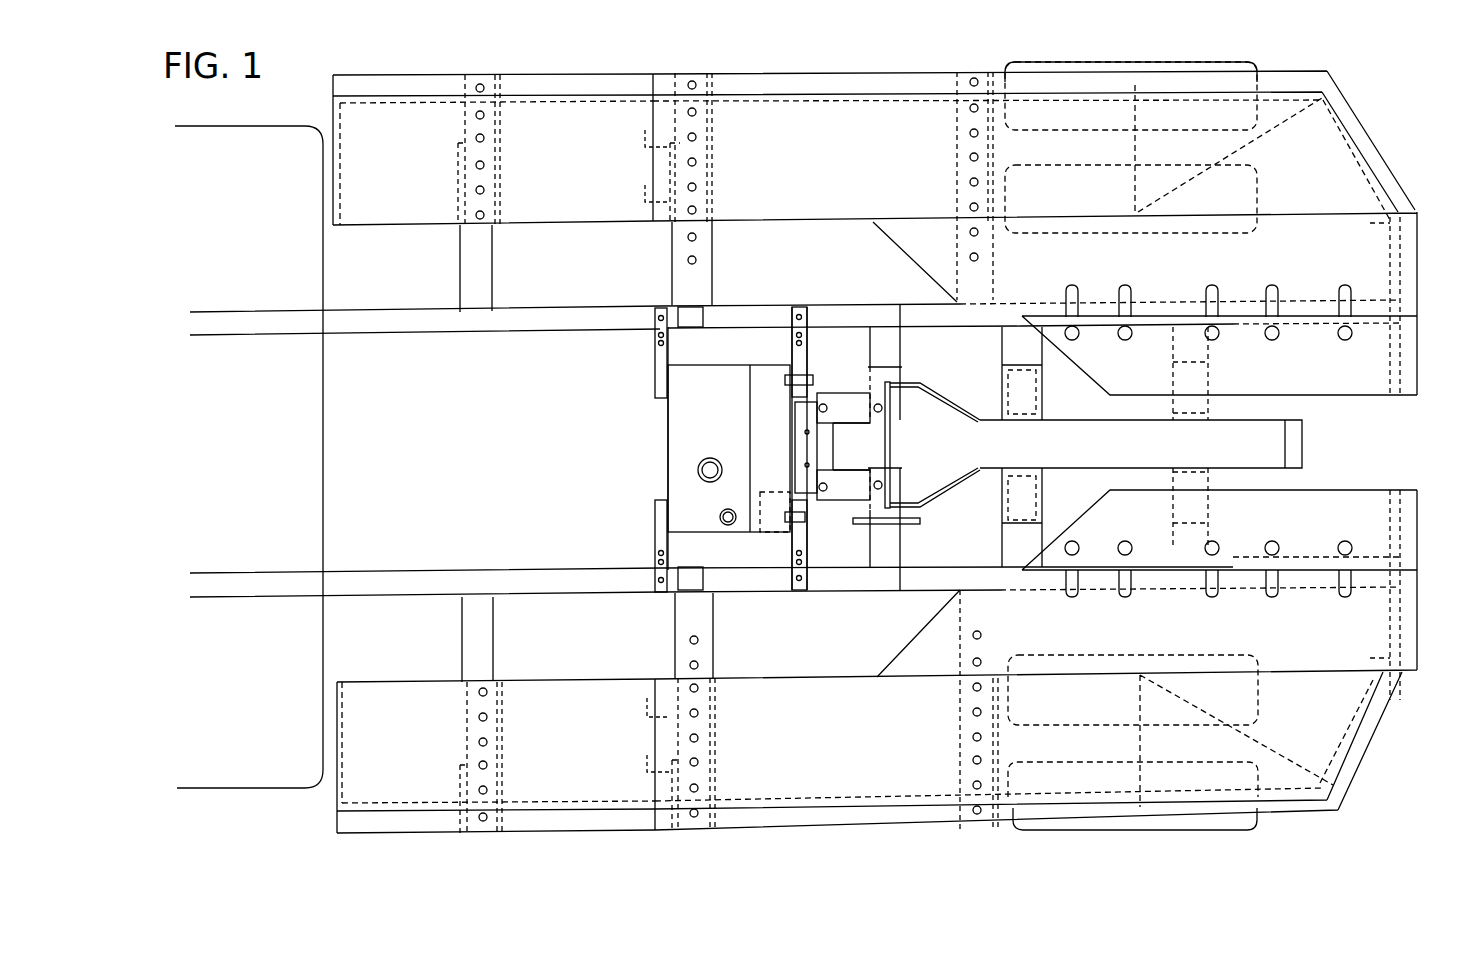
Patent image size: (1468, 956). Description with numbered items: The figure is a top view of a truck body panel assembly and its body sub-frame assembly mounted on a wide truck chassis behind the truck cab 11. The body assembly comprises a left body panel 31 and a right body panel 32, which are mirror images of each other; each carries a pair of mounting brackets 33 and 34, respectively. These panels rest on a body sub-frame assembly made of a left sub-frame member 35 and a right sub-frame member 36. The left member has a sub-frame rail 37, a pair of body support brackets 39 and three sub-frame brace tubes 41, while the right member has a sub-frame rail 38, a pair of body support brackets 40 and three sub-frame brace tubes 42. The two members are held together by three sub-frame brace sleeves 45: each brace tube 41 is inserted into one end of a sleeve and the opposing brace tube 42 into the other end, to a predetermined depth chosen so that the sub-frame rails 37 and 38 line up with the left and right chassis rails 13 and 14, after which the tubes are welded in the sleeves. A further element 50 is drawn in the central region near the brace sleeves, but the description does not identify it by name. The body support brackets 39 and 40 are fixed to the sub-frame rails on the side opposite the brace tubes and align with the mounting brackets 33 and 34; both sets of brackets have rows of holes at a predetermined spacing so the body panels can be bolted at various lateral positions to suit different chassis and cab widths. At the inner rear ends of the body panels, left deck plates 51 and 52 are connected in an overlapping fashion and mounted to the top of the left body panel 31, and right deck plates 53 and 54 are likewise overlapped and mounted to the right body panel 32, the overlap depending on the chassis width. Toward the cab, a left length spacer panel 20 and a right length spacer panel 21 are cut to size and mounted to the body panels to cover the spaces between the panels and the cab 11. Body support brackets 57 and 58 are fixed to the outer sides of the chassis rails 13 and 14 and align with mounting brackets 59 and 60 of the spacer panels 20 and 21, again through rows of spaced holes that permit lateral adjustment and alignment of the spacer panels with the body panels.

The truck cab 11 is at (237, 782).
The left chassis rail 13 is at (425, 585).
The right chassis rail 14 is at (420, 323).
The left length spacer panel 20 is at (575, 780).
The right length spacer panel 21 is at (390, 127).
The left body panel 31 is at (888, 780).
The right body panel 32 is at (815, 132).
The mounting brackets 33 is at (695, 830).
The mounting brackets 34 is at (687, 70).
The left sub-frame member 35 is at (1008, 600).
The right sub-frame member 36 is at (1008, 291).
The sub-frame rail 37 is at (1177, 590).
The sub-frame rail 38 is at (1187, 300).
The body support brackets 39 is at (700, 650).
The body support brackets 40 is at (705, 282).
The sub-frame brace tubes 41 is at (880, 548).
The sub-frame brace tubes 42 is at (878, 340).
The sub-frame brace sleeves 45 is at (905, 492).
The rod 50 is at (1077, 432).
The left deck plate 51 is at (1410, 640).
The left deck plate 52 is at (1383, 520).
The right deck plate 53 is at (1393, 240).
The right deck plate 54 is at (1343, 378).
The body support bracket 57 is at (485, 640).
The body support bracket 58 is at (482, 272).
The mounting bracket 59 is at (487, 825).
The mounting bracket 60 is at (472, 78).